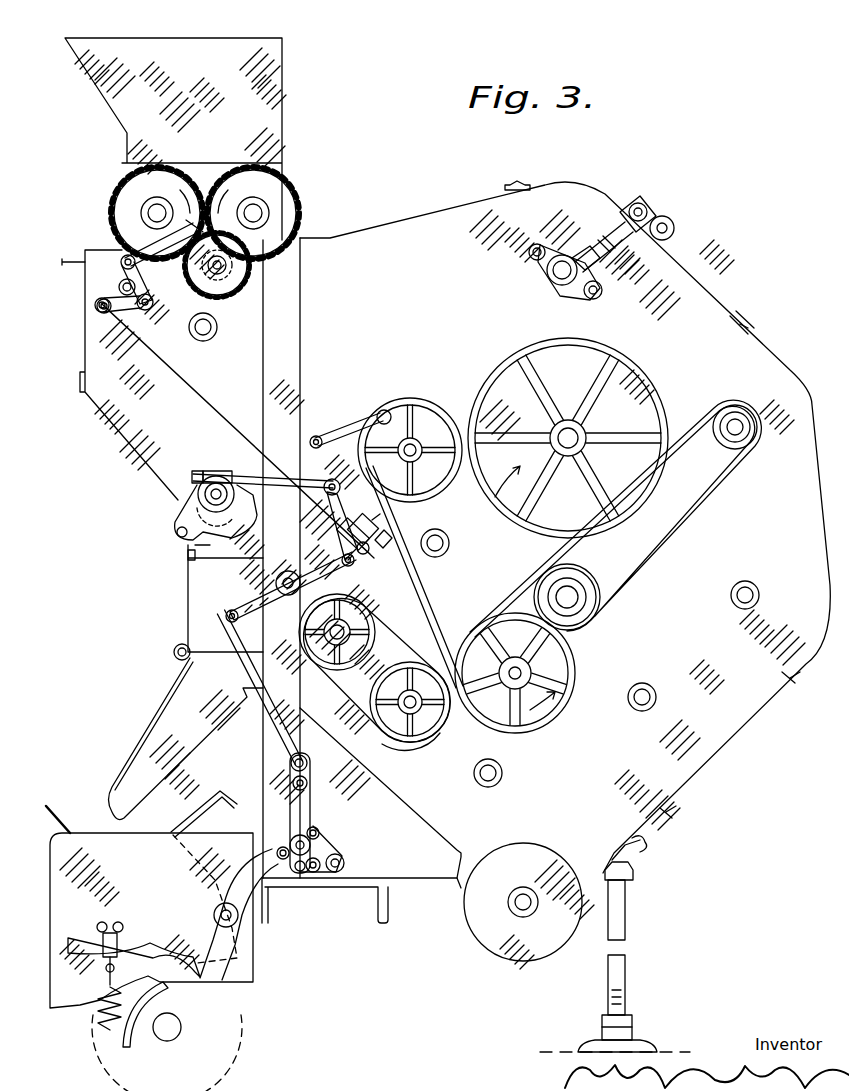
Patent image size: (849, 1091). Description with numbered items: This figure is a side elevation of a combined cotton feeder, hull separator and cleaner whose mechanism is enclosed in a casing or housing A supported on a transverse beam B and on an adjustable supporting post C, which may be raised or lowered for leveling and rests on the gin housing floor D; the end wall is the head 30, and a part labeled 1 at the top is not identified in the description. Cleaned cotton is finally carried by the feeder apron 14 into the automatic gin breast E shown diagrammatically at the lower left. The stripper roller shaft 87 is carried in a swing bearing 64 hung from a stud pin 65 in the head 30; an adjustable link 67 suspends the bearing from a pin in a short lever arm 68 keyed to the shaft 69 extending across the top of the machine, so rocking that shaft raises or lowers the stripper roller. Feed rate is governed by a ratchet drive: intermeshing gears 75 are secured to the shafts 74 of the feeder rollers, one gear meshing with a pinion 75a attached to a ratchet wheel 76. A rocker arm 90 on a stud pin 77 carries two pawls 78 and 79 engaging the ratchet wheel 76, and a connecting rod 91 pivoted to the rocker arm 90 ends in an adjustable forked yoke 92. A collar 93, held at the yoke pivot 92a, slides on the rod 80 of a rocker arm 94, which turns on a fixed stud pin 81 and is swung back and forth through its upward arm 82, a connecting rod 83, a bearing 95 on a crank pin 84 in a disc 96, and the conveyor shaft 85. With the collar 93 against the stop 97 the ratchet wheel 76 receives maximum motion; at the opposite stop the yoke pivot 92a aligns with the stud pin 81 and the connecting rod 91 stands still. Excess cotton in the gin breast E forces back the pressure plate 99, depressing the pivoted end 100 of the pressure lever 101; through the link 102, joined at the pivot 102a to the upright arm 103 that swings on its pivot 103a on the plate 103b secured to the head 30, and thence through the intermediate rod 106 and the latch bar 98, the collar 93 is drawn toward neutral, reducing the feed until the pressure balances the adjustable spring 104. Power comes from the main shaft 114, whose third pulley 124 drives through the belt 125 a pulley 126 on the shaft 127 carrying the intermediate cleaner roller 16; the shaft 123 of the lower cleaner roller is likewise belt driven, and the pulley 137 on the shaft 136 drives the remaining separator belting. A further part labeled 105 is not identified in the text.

The hopper 1 is at (272, 62).
The intermeshing gears 75 is at (242, 166).
The feeder roller shafts 74 is at (150, 212).
The pinion 75a is at (251, 270).
The ratchet wheel 76 is at (242, 290).
The pawl 78 is at (122, 258).
The stud pin 77 is at (119, 287).
The pawl 79 is at (160, 283).
The rocker arm 90 is at (118, 306).
The intermediate cleaner roller 16 is at (212, 328).
The head 30 is at (348, 342).
The stripper roller shaft 87 is at (548, 270).
The stud pin 65 is at (529, 253).
The swing bearing 64 is at (555, 248).
The adjustable link 67 is at (610, 248).
The short lever arm 68 is at (649, 206).
The shaft 69 is at (675, 228).
The casing or housing A is at (704, 304).
The connecting rod 91 is at (172, 375).
The connecting rod 83 is at (330, 481).
The bearing 95 is at (205, 485).
The disc 96 is at (232, 507).
The crank pin 84 is at (175, 527).
The shaft 85 is at (210, 546).
The arm 82 is at (333, 524).
The forked yoke 92 is at (347, 516).
The stop 97 is at (292, 566).
The collar 93 is at (388, 542).
The rocker arm 94 is at (372, 548).
The rod 80 is at (356, 560).
The yoke pivot 92a is at (426, 555).
The fixed stud pin 81 is at (325, 578).
The latch bar 98 is at (270, 600).
The third pulley 124 is at (366, 606).
The main shaft 114 is at (378, 622).
The shaft 127 is at (396, 698).
The pulley 126 is at (412, 744).
The belt 125 is at (426, 645).
The shaft 136 is at (558, 580).
The pulley 137 is at (582, 586).
The shaft 123 is at (497, 768).
The feeder apron 14 is at (152, 728).
The intermediate rod 106 is at (256, 718).
The upright arm 103 is at (312, 808).
The pivot 102a is at (293, 783).
The link 102 is at (272, 832).
The pivot 103a is at (320, 840).
The plate 103b is at (344, 858).
The pin 105 is at (306, 872).
The pivoted end 100 is at (288, 860).
The pressure lever 101 is at (222, 906).
The automatic gin breast E is at (254, 974).
The pressure plate 99 is at (201, 899).
The spring 104 is at (155, 1006).
The transverse beam B is at (390, 905).
The adjustable supporting post C is at (628, 972).
The gin housing floor D is at (678, 1052).